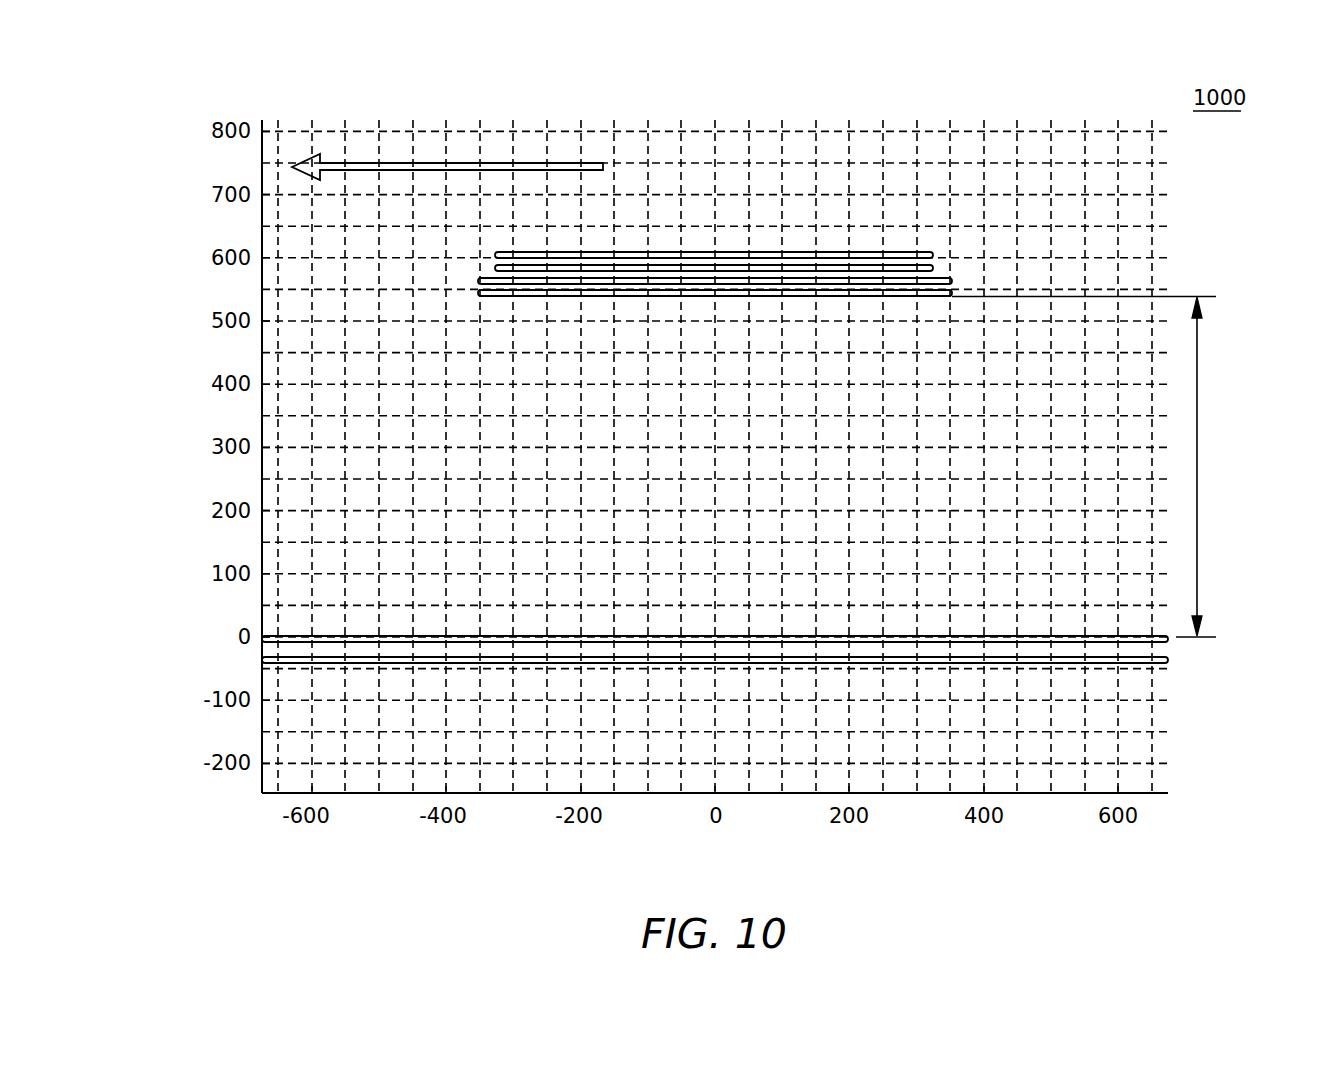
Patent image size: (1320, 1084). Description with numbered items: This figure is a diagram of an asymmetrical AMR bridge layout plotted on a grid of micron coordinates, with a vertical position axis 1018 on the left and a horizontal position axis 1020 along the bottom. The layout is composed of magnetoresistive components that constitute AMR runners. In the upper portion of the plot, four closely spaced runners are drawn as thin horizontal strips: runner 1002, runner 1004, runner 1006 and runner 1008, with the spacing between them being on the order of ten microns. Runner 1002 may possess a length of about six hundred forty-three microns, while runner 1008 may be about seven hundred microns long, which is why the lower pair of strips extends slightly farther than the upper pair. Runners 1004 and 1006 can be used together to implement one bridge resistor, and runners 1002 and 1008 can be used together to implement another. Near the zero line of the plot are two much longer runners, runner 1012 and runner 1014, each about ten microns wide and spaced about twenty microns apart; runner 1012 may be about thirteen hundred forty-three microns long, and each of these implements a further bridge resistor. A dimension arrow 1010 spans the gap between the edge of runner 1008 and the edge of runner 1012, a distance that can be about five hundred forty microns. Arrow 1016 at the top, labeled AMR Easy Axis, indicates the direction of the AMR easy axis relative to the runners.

The magnetoresistive component 1002 is at (926, 251).
The magnetoresistive component 1004 is at (934, 268).
The magnetoresistive component 1006 is at (953, 281).
The magnetoresistive component 1008 is at (930, 297).
The spacing distance 1010 is at (1198, 472).
The magnetoresistive component 1012 is at (1059, 636).
The magnetoresistive component 1014 is at (1076, 664).
The arrow 1016 is at (496, 162).
The Y axis 1018 is at (183, 559).
The X axis 1020 is at (583, 851).